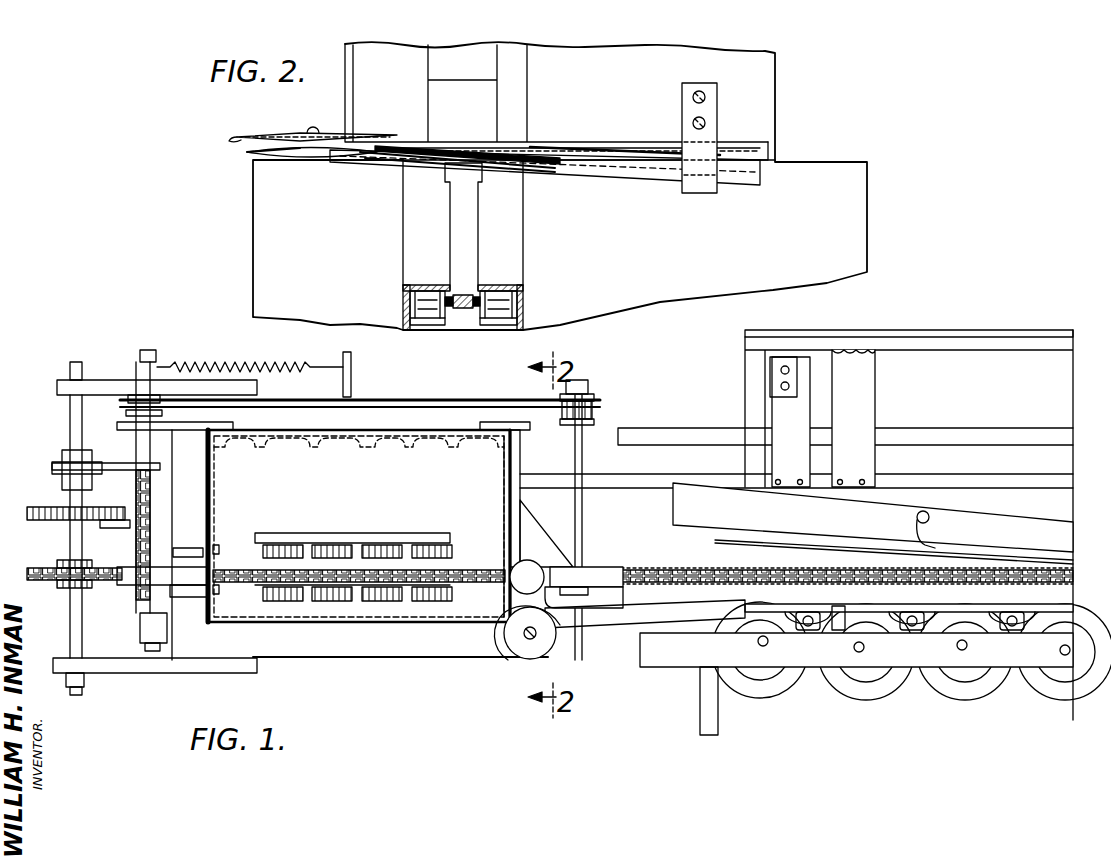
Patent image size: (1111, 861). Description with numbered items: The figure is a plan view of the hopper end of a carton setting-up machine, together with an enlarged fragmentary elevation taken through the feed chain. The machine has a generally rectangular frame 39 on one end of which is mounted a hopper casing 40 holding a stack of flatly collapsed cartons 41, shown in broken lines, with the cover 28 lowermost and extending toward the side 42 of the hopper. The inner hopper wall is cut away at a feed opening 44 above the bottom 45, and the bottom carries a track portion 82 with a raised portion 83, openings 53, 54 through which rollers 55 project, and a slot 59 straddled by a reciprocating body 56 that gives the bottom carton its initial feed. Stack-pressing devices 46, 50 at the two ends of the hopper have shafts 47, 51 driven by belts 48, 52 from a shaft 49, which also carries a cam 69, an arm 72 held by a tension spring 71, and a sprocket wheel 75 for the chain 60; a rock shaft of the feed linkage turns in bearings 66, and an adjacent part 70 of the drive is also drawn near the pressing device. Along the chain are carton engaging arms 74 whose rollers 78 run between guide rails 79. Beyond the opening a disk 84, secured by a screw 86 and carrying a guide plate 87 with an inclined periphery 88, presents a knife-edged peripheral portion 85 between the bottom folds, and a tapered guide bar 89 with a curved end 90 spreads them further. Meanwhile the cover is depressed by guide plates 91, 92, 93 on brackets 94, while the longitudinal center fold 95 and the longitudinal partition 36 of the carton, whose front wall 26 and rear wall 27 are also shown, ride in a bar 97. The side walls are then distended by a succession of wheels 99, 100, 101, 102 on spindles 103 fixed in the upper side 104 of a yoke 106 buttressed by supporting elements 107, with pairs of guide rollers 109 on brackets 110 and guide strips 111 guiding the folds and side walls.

In FIG. 2, the front wall 26 is at (420, 146).
In FIG. 2, the rear wall 27 is at (375, 166).
In FIG. 2, the cover 28 is at (628, 178).
In FIG. 2, the longitudinal partition 36 is at (540, 148).
In FIG. 1, the frame 39 is at (312, 660).
In FIG. 2, the hopper casing 40 is at (775, 95).
In FIG. 1, the hopper casing 40 is at (372, 622).
In FIG. 1, the collapsed cartons 41 is at (428, 622).
In FIG. 1, the side of the hopper 42 is at (414, 446).
In FIG. 2, the feed opening 44 is at (632, 142).
In FIG. 1, the bottom of the hopper 45 is at (470, 605).
In FIG. 1, the serrated chain device 46 is at (187, 597).
In FIG. 1, the driving shaft 47 is at (136, 490).
In FIG. 1, the belt 48 is at (112, 463).
In FIG. 1, the shaft 49 is at (70, 428).
In FIG. 1, the pressing device 50 is at (560, 575).
In FIG. 1, the drive shaft 51 is at (583, 508).
In FIG. 1, the belt 52 is at (128, 380).
In FIG. 1, the opening 53 is at (315, 533).
In FIG. 1, the opening 54 is at (410, 598).
In FIG. 1, the rollers 55 is at (420, 545).
In FIG. 1, the reciprocating body 56 is at (186, 548).
In FIG. 1, the slot 59 is at (351, 601).
In FIG. 2, the chain 60 is at (463, 310).
In FIG. 1, the chain 60 is at (262, 600).
In FIG. 1, the bearings 66 is at (140, 635).
In FIG. 1, the cam 69 is at (55, 507).
In FIG. 1, the shaft 70 is at (152, 492).
In FIG. 1, the tension spring 71 is at (232, 362).
In FIG. 1, the arm 72 is at (146, 364).
In FIG. 2, the carton engaging arms 74 is at (478, 178).
In FIG. 1, the sprocket wheel 75 is at (68, 562).
In FIG. 2, the rollers 78 is at (427, 300).
In FIG. 2, the guide rails 79 is at (495, 292).
In FIG. 1, the track portion 82 is at (236, 545).
In FIG. 1, the raised portion 83 is at (222, 552).
In FIG. 2, the disk 84 is at (296, 162).
In FIG. 1, the disk 84 is at (556, 640).
In FIG. 2, the knife-edged peripheral portion 85 is at (246, 152).
In FIG. 1, the knife-edged peripheral portion 85 is at (524, 618).
In FIG. 2, the screw 86 is at (315, 132).
In FIG. 1, the screw 86 is at (528, 640).
In FIG. 2, the guide plate 87 is at (262, 134).
In FIG. 1, the guide plate 87 is at (504, 644).
In FIG. 2, the inclined periphery 88 is at (232, 138).
In FIG. 1, the tapered guide bar 89 is at (605, 628).
In FIG. 1, the curved end 90 is at (556, 628).
In FIG. 1, the guide plate 91 is at (672, 428).
In FIG. 2, the guide plate 92 is at (685, 128).
In FIG. 1, the guide plate 92 is at (598, 478).
In FIG. 1, the guide plate 93 is at (716, 540).
In FIG. 1, the brackets 94 is at (855, 352).
In FIG. 2, the longitudinal center fold 95 is at (518, 147).
In FIG. 1, the bar 97 is at (673, 505).
In FIG. 1, the wheel 99 is at (755, 680).
In FIG. 1, the wheel 100 is at (872, 685).
In FIG. 1, the wheel 101 is at (957, 683).
In FIG. 1, the wheel 102 is at (1040, 684).
In FIG. 1, the spindles 103 is at (758, 643).
In FIG. 1, the upper side of yoke 104 is at (672, 660).
In FIG. 1, the yoke 106 is at (962, 648).
In FIG. 1, the supporting elements 107 is at (700, 722).
In FIG. 1, the guide rollers 109 is at (815, 604).
In FIG. 1, the bracket 110 is at (808, 632).
In FIG. 1, the guide strips 111 is at (922, 604).